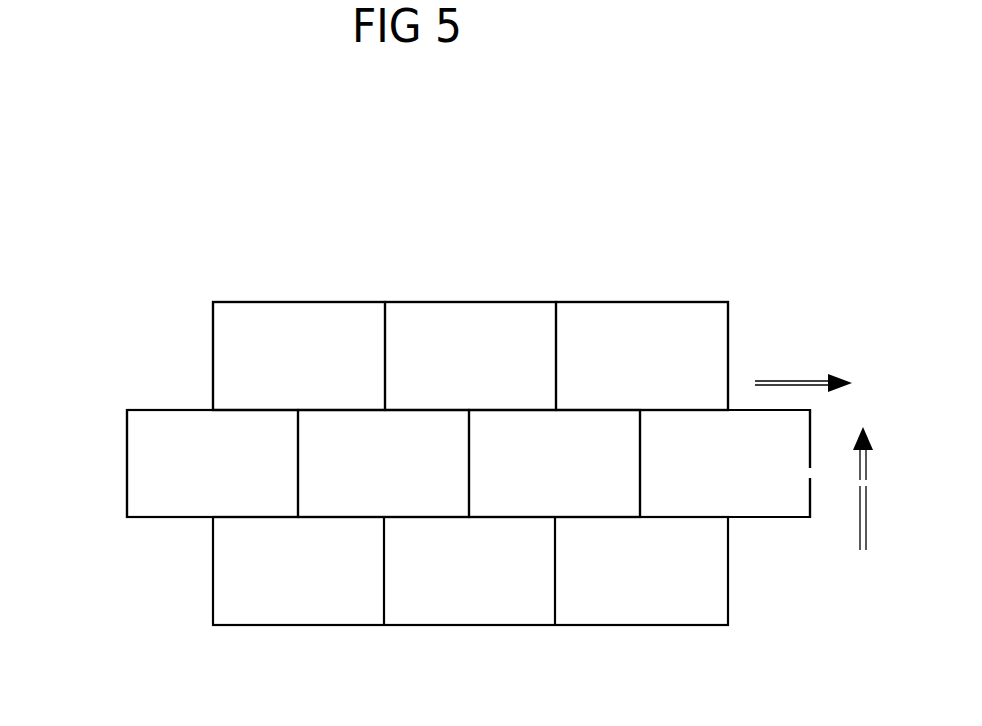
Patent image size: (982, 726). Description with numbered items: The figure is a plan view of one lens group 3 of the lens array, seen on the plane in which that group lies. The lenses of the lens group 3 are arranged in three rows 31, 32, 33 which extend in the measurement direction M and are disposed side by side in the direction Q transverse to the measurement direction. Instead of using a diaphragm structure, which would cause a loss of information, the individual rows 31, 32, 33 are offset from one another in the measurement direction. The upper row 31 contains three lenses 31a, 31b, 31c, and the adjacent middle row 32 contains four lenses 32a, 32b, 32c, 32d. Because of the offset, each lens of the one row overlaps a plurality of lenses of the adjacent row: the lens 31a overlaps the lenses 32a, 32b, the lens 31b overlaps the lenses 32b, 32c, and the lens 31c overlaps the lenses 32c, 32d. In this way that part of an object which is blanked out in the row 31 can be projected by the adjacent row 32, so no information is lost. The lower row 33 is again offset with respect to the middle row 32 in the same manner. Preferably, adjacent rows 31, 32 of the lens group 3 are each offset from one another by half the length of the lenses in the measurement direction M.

The lens group 3 is at (787, 700).
The row of lenses 31 is at (421, 313).
The lens 31a is at (287, 340).
The lens 31b is at (468, 333).
The lens 31c is at (635, 335).
The row of lenses 32 is at (422, 561).
The lens 32a is at (155, 478).
The lens 32b is at (350, 489).
The lens 32c is at (593, 490).
The lens 32d is at (753, 493).
The row of lenses 33 is at (198, 575).